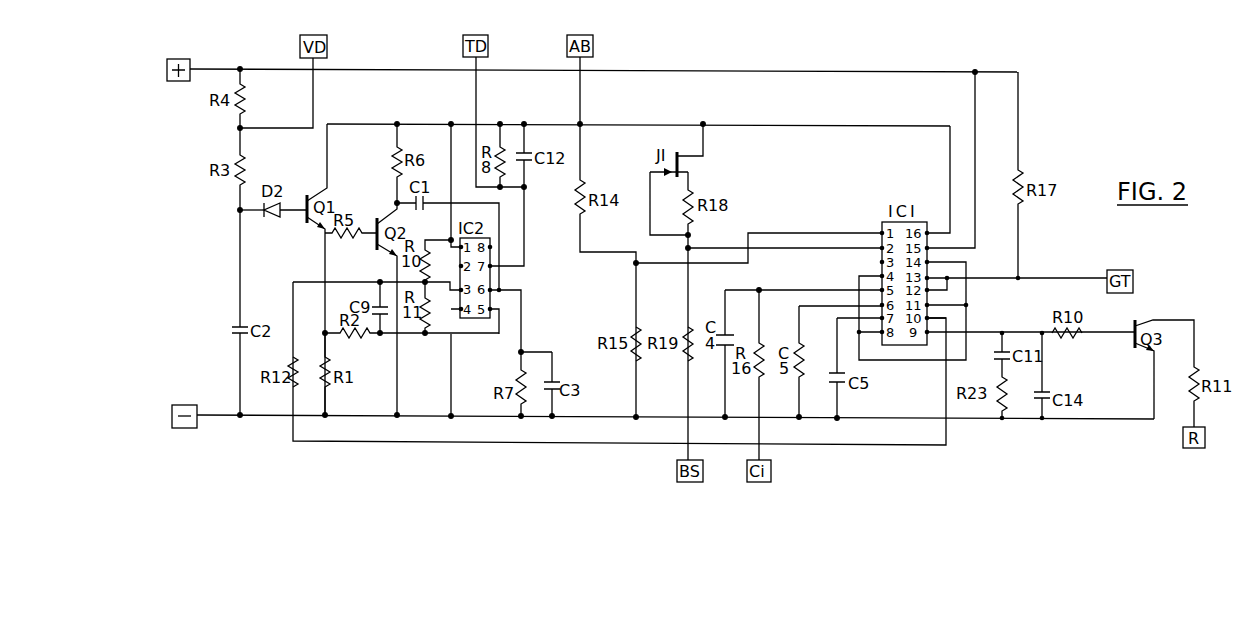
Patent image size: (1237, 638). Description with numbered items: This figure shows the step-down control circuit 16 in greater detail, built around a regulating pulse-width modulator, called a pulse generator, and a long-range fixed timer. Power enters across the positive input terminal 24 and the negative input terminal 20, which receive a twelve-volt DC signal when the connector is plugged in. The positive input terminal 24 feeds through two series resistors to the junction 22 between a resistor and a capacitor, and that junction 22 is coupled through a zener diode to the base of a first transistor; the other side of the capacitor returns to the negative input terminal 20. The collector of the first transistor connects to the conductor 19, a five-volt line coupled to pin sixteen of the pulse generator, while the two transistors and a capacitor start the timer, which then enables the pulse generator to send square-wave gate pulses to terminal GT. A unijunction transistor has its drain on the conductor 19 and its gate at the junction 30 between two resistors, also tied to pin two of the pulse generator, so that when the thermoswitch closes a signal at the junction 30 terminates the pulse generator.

The step-down control circuit 16 is at (657, 69).
The conductor 19 is at (426, 123).
The negative input terminal 20 is at (178, 405).
The junction 22 is at (240, 210).
The positive input terminal 24 is at (166, 70).
The junction 30 is at (688, 248).